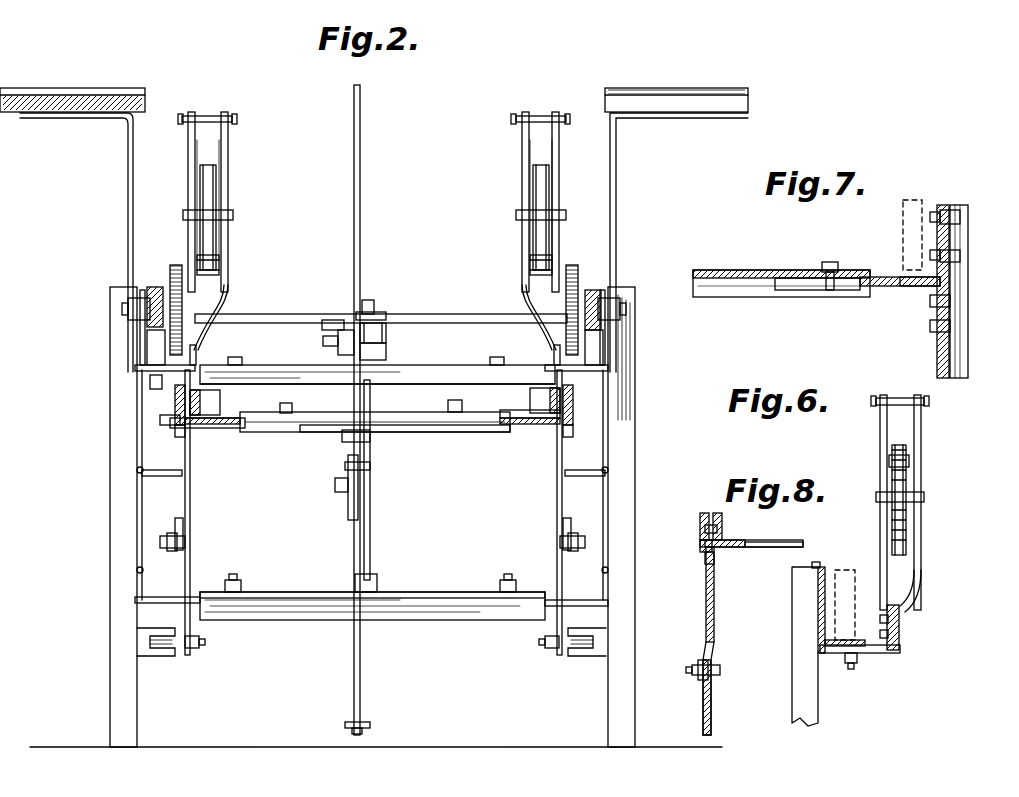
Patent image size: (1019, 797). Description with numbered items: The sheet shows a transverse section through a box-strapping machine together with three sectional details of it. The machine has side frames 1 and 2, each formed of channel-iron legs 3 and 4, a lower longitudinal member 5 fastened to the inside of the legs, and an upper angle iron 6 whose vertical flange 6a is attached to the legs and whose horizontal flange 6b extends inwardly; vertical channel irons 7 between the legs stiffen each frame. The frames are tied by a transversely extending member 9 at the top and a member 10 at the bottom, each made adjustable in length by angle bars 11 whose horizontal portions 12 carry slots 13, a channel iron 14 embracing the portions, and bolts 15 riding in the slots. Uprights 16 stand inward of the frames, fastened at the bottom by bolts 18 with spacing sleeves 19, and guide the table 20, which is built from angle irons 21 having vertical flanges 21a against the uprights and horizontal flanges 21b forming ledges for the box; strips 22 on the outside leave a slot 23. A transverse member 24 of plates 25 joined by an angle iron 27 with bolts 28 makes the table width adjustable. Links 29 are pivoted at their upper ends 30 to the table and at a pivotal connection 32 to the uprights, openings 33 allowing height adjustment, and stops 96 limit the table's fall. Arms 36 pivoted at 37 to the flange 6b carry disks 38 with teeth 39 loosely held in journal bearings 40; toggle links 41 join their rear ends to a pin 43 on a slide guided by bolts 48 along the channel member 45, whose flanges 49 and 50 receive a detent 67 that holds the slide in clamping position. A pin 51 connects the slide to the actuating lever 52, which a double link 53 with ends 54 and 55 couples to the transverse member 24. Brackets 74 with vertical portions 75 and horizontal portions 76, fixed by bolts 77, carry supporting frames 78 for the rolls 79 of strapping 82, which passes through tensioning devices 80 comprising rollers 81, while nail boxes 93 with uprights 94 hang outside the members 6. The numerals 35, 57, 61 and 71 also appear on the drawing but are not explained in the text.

In FIG. 2, the side frame 1 is at (109, 517).
In FIG. 2, the side frame 2 is at (632, 517).
In FIG. 2, the leg 3 is at (125, 703).
In FIG. 6, the leg 4 is at (792, 672).
In FIG. 2, the lower member 5 is at (157, 656).
In FIG. 2, the upper member 6 is at (147, 343).
In FIG. 7, the upper member 6 is at (949, 237).
In FIG. 6, the upper member 6 is at (818, 624).
In FIG. 2, the vertical flange 6a is at (626, 282).
In FIG. 7, the vertical flange 6a is at (945, 210).
In FIG. 6, the vertical flange 6a is at (828, 550).
In FIG. 2, the horizontal flange 6b is at (585, 415).
In FIG. 7, the horizontal flange 6b is at (912, 286).
In FIG. 6, the horizontal flange 6b is at (825, 644).
In FIG. 7, the vertical channel iron 7 is at (968, 325).
In FIG. 2, the transversely extending member 9 is at (290, 368).
In FIG. 7, the transversely extending member 9 is at (745, 297).
In FIG. 2, the transversely extending member 10 is at (280, 620).
In FIG. 2, the angle bar 11 is at (142, 392).
In FIG. 7, the angle bar 11 is at (935, 332).
In FIG. 2, the horizontal portion 12 is at (160, 604).
In FIG. 7, the horizontal portion 12 is at (880, 286).
In FIG. 7, the slot 13 is at (815, 290).
In FIG. 2, the channel iron 14 is at (313, 586).
In FIG. 2, the bolt 15 is at (235, 580).
In FIG. 7, the bolt 15 is at (838, 257).
In FIG. 2, the upright 16 is at (190, 496).
In FIG. 8, the upright 16 is at (712, 726).
In FIG. 2, the bolt 18 is at (200, 646).
In FIG. 2, the sleeve 19 is at (170, 636).
In FIG. 2, the table 20 is at (445, 412).
In FIG. 2, the angle iron 21 is at (548, 426).
In FIG. 8, the angle iron 21 is at (730, 528).
In FIG. 2, the vertical flange 21a is at (550, 385).
In FIG. 8, the vertical flange 21a is at (718, 507).
In FIG. 2, the horizontal flange 21b is at (530, 424).
In FIG. 8, the horizontal flange 21b is at (732, 548).
In FIG. 2, the strip 22 is at (168, 425).
In FIG. 8, the strip 22 is at (702, 545).
In FIG. 2, the slot 23 is at (176, 437).
In FIG. 8, the slot 23 is at (707, 560).
In FIG. 2, the transverse member 24 is at (318, 432).
In FIG. 2, the plate 25 is at (285, 430).
In FIG. 8, the plate 25 is at (770, 548).
In FIG. 2, the angle iron 27 is at (425, 432).
In FIG. 2, the bolt 28 is at (470, 400).
In FIG. 2, the link 29 is at (177, 521).
In FIG. 8, the link 29 is at (714, 612).
In FIG. 8, the upper end 30 is at (705, 527).
In FIG. 2, the pivotal connection 32 is at (190, 546).
In FIG. 8, the pivotal connection 32 is at (720, 670).
In FIG. 8, the opening 33 is at (712, 706).
In FIG. 2, the bearing block 35 is at (220, 398).
In FIG. 2, the arm 36 is at (155, 287).
In FIG. 7, the arm 36 is at (917, 205).
In FIG. 6, the arm 36 is at (853, 577).
In FIG. 2, the pivot 37 is at (155, 389).
In FIG. 2, the disk 38 is at (172, 265).
In FIG. 2, the teeth 39 is at (196, 322).
In FIG. 2, the journal bearing 40 is at (128, 310).
In FIG. 2, the link 41 is at (283, 307).
In FIG. 2, the pin 43 is at (370, 300).
In FIG. 2, the channel member 45 is at (342, 345).
In FIG. 2, the guiding bolt 48 is at (378, 305).
In FIG. 2, the upper horizontal flange 49 is at (386, 330).
In FIG. 2, the lower horizontal flange 50 is at (386, 355).
In FIG. 2, the pin 51 is at (338, 320).
In FIG. 2, the actuating lever 52 is at (360, 138).
In FIG. 2, the double link 53 is at (348, 478).
In FIG. 2, the end 54 is at (340, 492).
In FIG. 2, the end 55 is at (376, 440).
In FIG. 2, the foot 57 is at (372, 720).
In FIG. 2, the rod 61 is at (372, 398).
In FIG. 2, the detent 67 is at (323, 340).
In FIG. 2, the beam edge 71 is at (360, 374).
In FIG. 6, the bracket 74 is at (917, 594).
In FIG. 2, the vertical portion 75 is at (196, 350).
In FIG. 6, the vertical portion 75 is at (899, 645).
In FIG. 6, the horizontal portion 76 is at (870, 653).
In FIG. 6, the bolt 77 is at (848, 665).
In FIG. 2, the supporting frame 78 is at (188, 184).
In FIG. 6, the supporting frame 78 is at (921, 462).
In FIG. 6, the roll 79 is at (906, 486).
In FIG. 2, the tensioning device 80 is at (200, 207).
In FIG. 2, the roller 81 is at (222, 248).
In FIG. 2, the strapping 82 is at (208, 235).
In FIG. 6, the strapping 82 is at (895, 475).
In FIG. 2, the nail box 93 is at (63, 88).
In FIG. 2, the upright 94 is at (130, 156).
In FIG. 2, the stop 96 is at (178, 476).